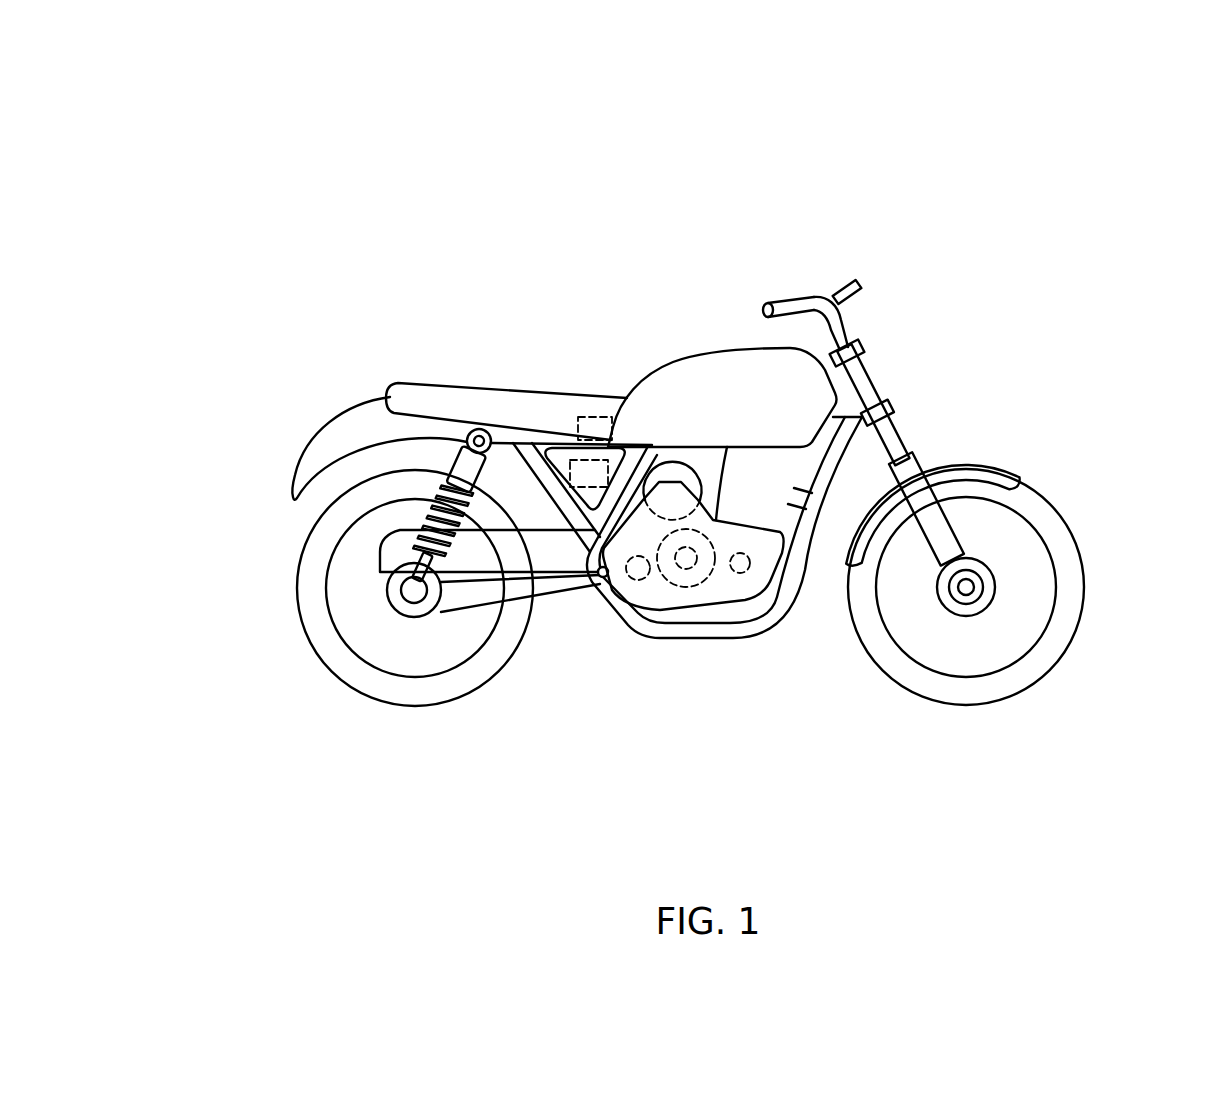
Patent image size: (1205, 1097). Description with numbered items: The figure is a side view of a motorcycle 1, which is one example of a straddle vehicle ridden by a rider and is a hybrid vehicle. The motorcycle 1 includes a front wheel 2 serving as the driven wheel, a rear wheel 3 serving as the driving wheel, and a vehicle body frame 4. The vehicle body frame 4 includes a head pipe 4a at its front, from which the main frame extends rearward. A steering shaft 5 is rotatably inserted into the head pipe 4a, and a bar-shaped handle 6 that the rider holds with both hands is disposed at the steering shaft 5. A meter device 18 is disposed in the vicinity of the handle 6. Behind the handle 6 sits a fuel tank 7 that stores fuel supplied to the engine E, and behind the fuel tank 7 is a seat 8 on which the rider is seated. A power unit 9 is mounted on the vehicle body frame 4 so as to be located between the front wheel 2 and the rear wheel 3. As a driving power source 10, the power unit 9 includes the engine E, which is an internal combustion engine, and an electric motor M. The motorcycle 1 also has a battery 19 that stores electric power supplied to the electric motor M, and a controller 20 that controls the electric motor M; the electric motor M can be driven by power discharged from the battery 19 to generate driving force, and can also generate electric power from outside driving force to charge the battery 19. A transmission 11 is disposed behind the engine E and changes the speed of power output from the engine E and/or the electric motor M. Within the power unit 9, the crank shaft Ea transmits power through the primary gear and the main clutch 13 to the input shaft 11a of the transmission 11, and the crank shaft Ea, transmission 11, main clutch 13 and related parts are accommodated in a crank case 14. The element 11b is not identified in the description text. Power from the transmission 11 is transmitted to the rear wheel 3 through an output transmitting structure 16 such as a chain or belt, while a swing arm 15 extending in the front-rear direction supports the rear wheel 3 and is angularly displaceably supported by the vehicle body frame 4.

The motorcycle 1 is at (951, 244).
The front wheel 2 is at (1083, 554).
The rear wheel 3 is at (297, 590).
The vehicle body frame 4 is at (823, 462).
The head pipe 4a is at (855, 363).
The steering shaft 5 is at (878, 381).
The handle 6 is at (769, 298).
The fuel tank 7 is at (642, 368).
The seat 8 is at (584, 417).
The power unit 9 is at (770, 566).
The driving power source 10 is at (743, 254).
The electric motor M is at (679, 462).
The engine E is at (767, 468).
The crank shaft Ea is at (755, 585).
The transmission 11 is at (653, 598).
The input shaft 11a is at (687, 572).
The output shaft 11b is at (638, 592).
The main clutch 13 is at (670, 582).
The crank case 14 is at (742, 575).
The swing arm 15 is at (549, 574).
The output transmitting structure 16 is at (517, 605).
The meter device 18 is at (845, 280).
The battery 19 is at (565, 440).
The controller 20 is at (572, 448).